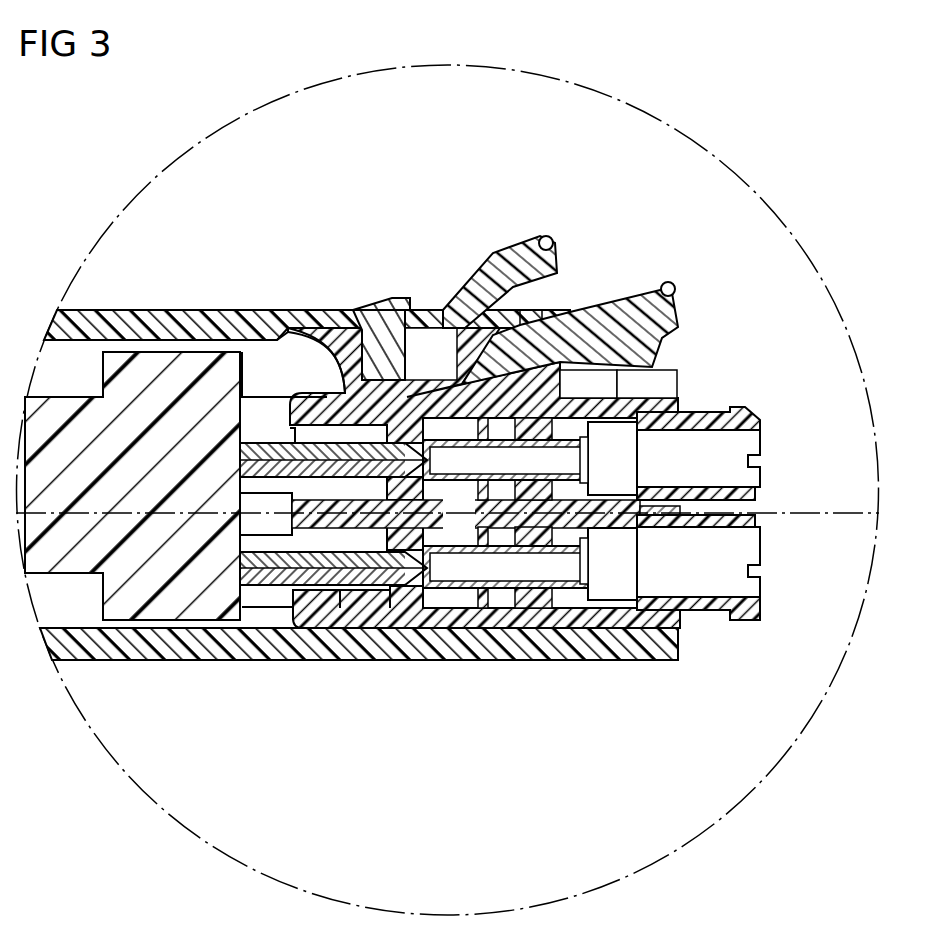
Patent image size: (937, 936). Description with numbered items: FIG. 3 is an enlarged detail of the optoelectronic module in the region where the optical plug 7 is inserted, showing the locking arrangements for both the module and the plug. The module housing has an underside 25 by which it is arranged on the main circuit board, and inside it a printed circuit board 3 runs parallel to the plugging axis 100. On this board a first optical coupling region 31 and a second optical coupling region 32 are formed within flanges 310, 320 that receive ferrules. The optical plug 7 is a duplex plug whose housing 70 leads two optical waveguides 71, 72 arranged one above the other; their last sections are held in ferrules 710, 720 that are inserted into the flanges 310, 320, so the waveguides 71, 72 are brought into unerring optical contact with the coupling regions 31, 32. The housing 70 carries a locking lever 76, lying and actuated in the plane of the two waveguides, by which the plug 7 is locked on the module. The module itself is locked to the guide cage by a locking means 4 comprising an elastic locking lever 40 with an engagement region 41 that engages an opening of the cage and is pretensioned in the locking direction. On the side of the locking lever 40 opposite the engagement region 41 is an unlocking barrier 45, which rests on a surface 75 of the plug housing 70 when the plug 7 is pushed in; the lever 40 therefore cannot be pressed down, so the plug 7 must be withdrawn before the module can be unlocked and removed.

The printed circuit board 3 is at (82, 557).
The locking means 4 is at (513, 231).
The optical plug 7 is at (702, 388).
The underside 25 is at (607, 662).
The first optical coupling region 31 is at (245, 567).
The second optical coupling region 32 is at (243, 462).
The locking lever 40 is at (550, 238).
The engagement region 41 is at (399, 296).
The unlocking barrier 45 is at (382, 362).
The housing 70 is at (680, 617).
The optical waveguide 71 is at (327, 592).
The optical waveguide 72 is at (300, 440).
The surface 75 is at (274, 333).
The locking lever 76 is at (672, 288).
The plugging axis 100 is at (820, 512).
The flange 310 is at (270, 600).
The flange 320 is at (258, 425).
The ferrule 710 is at (357, 592).
The ferrule 720 is at (343, 372).